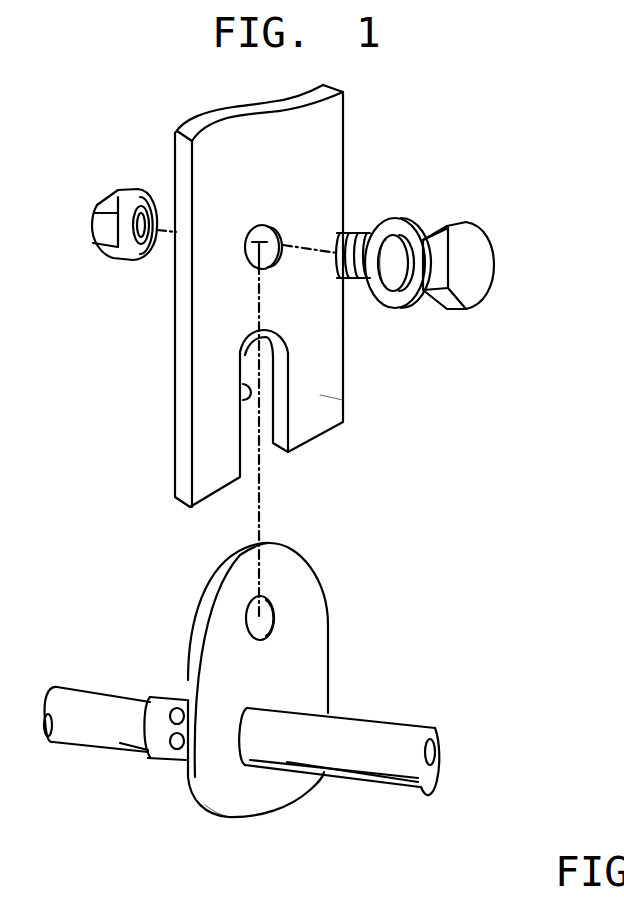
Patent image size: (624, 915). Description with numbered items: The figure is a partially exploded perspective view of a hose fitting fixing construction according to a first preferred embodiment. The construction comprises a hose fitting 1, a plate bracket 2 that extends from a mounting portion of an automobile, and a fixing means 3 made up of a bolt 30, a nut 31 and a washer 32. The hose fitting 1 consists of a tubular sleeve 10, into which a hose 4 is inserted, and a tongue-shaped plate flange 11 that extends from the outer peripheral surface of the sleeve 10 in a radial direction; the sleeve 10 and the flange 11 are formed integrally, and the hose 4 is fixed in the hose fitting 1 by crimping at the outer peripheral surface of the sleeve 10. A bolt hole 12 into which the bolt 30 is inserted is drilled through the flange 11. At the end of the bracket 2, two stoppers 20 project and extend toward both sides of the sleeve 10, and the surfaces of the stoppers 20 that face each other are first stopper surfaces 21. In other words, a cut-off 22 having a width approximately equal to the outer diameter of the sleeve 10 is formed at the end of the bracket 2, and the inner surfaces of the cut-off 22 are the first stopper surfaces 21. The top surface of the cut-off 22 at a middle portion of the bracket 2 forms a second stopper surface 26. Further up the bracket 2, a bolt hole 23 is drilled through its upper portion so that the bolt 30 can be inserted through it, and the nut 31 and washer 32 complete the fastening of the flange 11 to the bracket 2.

The hose fitting 1 is at (282, 713).
The plate bracket 2 is at (327, 123).
The fixing means 3 is at (465, 297).
The hose 4 is at (388, 763).
The tubular sleeve 10 is at (160, 742).
The tongue-shaped plate flange 11 is at (230, 778).
The bolt hole 12 is at (268, 625).
The stoppers 20 is at (200, 462).
The first stopper surfaces 21 is at (243, 396).
The cut-off 22 is at (253, 462).
The bolt hole 23 is at (243, 258).
The second stopper surface 26 is at (240, 352).
The bolt 30 is at (480, 253).
The nut 31 is at (97, 222).
The washer 32 is at (403, 220).